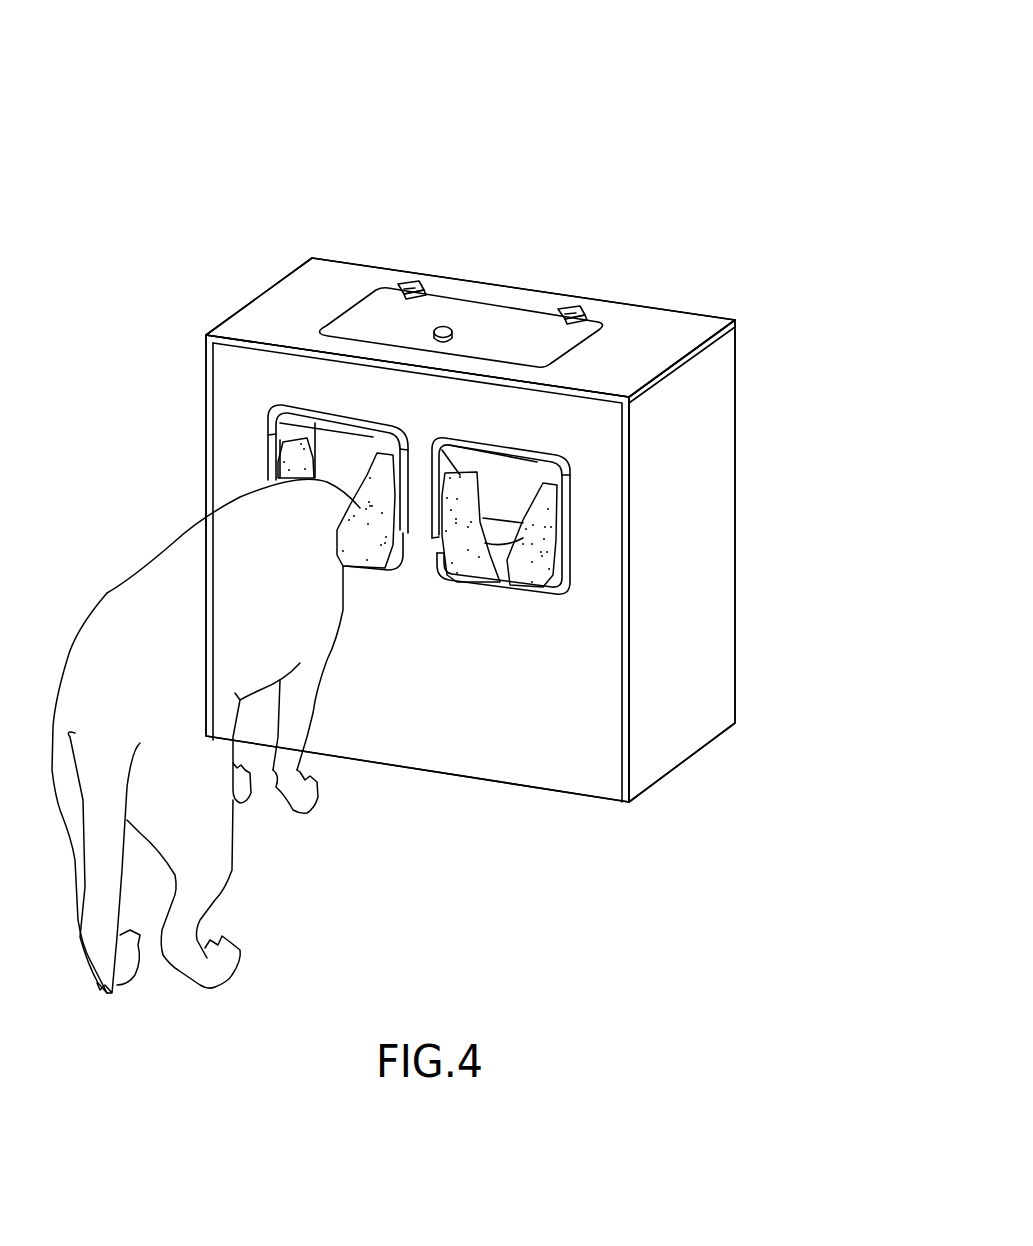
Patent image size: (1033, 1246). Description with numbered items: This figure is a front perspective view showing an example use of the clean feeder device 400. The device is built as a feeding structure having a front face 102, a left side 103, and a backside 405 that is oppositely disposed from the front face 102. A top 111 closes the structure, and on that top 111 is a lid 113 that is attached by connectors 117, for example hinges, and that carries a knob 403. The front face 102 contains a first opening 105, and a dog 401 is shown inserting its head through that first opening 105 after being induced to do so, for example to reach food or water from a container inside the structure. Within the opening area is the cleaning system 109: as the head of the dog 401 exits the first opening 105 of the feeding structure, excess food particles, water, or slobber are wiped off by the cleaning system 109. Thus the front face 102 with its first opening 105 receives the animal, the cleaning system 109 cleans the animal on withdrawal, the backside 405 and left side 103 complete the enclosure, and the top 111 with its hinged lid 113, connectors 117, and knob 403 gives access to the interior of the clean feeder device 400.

The clean feeder device 400 is at (678, 43).
The top 111 is at (634, 350).
The left side 103 is at (695, 570).
The front face 102 is at (449, 748).
The lid 113 is at (365, 315).
The knob 403 is at (436, 329).
The connectors 117 is at (632, 238).
The first opening 105 is at (268, 393).
The backside 405 is at (515, 475).
The cleaning system 109 is at (385, 530).
The dog 401 is at (180, 598).